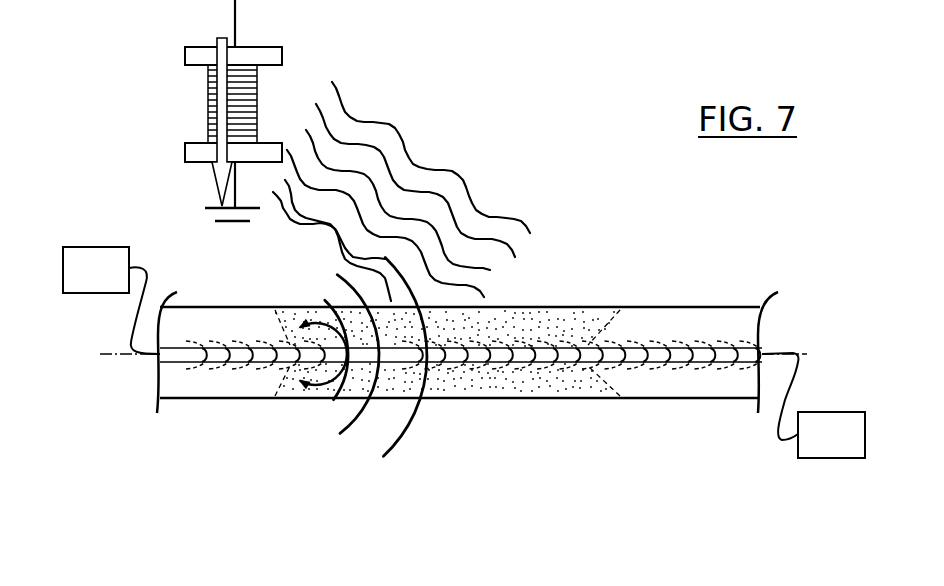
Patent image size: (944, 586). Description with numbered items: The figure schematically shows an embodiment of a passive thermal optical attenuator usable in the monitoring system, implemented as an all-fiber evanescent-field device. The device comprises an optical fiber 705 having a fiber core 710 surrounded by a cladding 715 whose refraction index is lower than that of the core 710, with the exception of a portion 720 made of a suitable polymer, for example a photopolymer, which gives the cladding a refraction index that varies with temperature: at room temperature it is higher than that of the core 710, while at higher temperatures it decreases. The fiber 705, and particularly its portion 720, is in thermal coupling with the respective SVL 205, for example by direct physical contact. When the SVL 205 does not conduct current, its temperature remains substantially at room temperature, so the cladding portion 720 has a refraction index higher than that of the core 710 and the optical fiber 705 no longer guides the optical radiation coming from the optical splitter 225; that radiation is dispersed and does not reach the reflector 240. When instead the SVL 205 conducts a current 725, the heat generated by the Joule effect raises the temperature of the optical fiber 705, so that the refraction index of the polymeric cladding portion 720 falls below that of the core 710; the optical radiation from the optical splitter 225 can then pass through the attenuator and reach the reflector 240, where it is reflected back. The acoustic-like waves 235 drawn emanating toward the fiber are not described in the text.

The SVL 205 is at (283, 110).
The current 725 is at (207, 108).
The optical splitter 225 is at (95, 246).
The acoustic waves 235 is at (298, 445).
The optical fiber 705 is at (690, 307).
The cladding 715 is at (740, 332).
The cladding portion 720 is at (530, 322).
The fiber core 710 is at (562, 368).
The reflector 240 is at (820, 458).